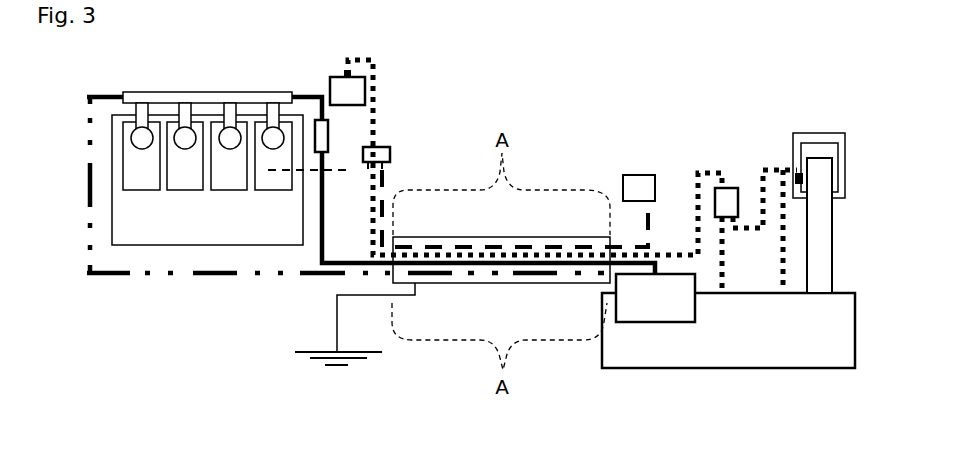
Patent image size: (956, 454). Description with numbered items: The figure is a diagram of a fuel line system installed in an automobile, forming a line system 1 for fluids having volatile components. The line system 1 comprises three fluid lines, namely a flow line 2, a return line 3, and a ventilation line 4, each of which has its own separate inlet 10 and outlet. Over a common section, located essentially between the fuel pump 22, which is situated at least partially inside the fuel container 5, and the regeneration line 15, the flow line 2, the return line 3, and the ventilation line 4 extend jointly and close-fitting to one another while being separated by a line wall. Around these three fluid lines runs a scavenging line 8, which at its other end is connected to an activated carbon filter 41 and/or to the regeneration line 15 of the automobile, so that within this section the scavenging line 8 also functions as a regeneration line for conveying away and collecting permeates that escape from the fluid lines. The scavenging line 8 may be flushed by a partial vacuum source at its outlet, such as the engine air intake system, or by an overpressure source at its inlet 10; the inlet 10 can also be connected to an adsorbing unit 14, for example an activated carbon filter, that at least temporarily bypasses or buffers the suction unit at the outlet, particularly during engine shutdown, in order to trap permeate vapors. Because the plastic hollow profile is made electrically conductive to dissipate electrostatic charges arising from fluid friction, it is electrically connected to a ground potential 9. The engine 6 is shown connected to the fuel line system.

The line system 1 is at (589, 83).
The flow line 2 is at (338, 268).
The return line 3 is at (195, 276).
The ventilation line 4 is at (378, 110).
The fuel container 5 is at (696, 349).
The internal combustion engine 6 is at (200, 226).
The scavenging line 8 is at (445, 247).
The ground potential 9 is at (295, 352).
The inlet 10 is at (347, 72).
The adsorbing unit 14 is at (343, 88).
The regeneration line 15 is at (349, 172).
The fuel pump 22 is at (657, 301).
The activated carbon filter 41 is at (633, 183).